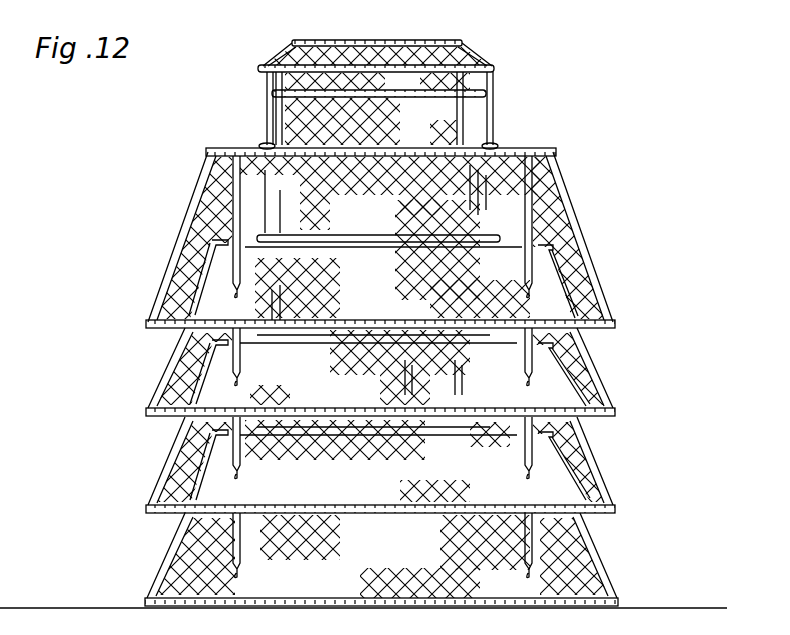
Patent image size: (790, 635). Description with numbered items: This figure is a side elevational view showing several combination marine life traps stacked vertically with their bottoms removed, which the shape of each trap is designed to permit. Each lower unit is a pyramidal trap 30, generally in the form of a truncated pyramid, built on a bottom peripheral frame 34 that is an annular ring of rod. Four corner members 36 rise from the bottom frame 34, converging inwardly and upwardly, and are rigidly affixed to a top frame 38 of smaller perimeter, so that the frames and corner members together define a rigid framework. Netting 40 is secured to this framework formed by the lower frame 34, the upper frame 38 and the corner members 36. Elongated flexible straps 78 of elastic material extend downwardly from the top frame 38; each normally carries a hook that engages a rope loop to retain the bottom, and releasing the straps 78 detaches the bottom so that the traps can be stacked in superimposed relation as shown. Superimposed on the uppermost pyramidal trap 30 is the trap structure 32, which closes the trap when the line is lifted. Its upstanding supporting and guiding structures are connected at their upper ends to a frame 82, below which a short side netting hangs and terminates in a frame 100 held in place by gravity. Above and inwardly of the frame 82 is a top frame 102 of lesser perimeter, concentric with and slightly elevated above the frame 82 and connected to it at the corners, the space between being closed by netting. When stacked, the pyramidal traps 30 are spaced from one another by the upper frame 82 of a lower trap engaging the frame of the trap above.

The pyramidal trap 30 is at (578, 209).
The trap structure 32 is at (384, 86).
The bottom peripheral frame 34 is at (616, 322).
The corner members 36 is at (586, 238).
The top frame 38 is at (500, 153).
The netting 40 is at (572, 266).
The elongated flexible strap 78 is at (531, 183).
The frame 82 is at (290, 62).
The frame 100 is at (275, 88).
The top frame 102 is at (452, 44).